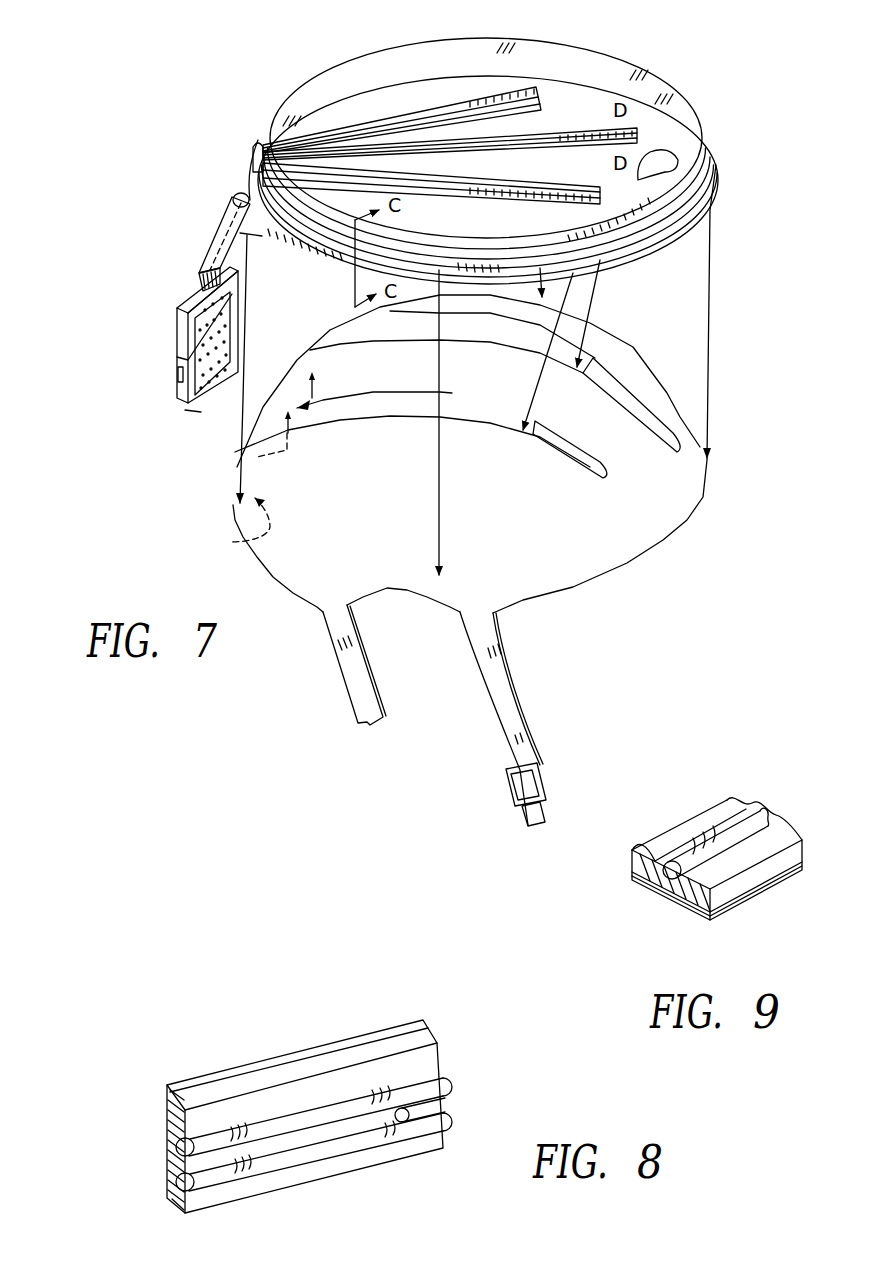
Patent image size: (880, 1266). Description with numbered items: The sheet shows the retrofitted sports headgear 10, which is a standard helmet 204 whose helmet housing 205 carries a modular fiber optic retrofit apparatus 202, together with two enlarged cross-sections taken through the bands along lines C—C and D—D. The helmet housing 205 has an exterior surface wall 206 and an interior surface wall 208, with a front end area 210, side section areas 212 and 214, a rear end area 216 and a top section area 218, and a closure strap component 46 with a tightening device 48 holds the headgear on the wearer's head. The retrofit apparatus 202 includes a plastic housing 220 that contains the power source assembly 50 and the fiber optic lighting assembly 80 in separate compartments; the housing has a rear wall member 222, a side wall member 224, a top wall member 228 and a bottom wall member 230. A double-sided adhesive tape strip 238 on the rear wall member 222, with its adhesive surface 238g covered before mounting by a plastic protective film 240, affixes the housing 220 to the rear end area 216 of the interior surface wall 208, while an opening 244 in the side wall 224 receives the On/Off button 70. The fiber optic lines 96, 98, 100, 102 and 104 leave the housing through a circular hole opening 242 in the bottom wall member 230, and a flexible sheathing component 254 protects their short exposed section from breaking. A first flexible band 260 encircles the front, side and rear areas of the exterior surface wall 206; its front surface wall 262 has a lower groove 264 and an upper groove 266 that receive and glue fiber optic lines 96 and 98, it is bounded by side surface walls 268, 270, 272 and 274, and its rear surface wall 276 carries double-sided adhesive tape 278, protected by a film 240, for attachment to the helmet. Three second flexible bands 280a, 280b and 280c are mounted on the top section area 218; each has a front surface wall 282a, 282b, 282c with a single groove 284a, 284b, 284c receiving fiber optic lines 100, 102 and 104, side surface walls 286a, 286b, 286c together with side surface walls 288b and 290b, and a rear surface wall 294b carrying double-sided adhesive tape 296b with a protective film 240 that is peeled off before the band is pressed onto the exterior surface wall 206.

In FIG. 7, the sports headgear 10 is at (767, 75).
In FIG. 7, the closure strap component 46 is at (343, 645).
In FIG. 7, the tightening device 48 is at (507, 775).
In FIG. 7, the power source assembly 50 is at (178, 403).
In FIG. 7, the On/Off button 70 is at (182, 357).
In FIG. 7, the fiber optic lighting assembly 80 is at (170, 306).
In FIG. 7, the fiber optic line 96 is at (707, 167).
In FIG. 8, the fiber optic line 96 is at (347, 1140).
In FIG. 7, the fiber optic line 98 is at (712, 143).
In FIG. 8, the fiber optic line 98 is at (437, 1085).
In FIG. 7, the fiber optic line 100 is at (456, 170).
In FIG. 7, the fiber optic line 102 is at (463, 138).
In FIG. 9, the fiber optic line 102 is at (757, 823).
In FIG. 7, the fiber optic line 104 is at (482, 88).
In FIG. 7, the modular fiber optic retrofit apparatus 202 is at (568, 47).
In FIG. 7, the standard helmet 204 is at (365, 495).
In FIG. 7, the helmet housing 205 is at (707, 510).
In FIG. 7, the exterior surface wall 206 is at (615, 502).
In FIG. 7, the interior surface wall 208 is at (247, 540).
In FIG. 7, the front end area 210 is at (667, 470).
In FIG. 7, the side section area 212 is at (420, 587).
In FIG. 7, the side section area 214 is at (613, 323).
In FIG. 7, the rear end area 216 is at (237, 468).
In FIG. 7, the top section area 218 is at (460, 393).
In FIG. 7, the plastic housing 220 is at (172, 378).
In FIG. 7, the rear wall member 222 is at (255, 315).
In FIG. 7, the side wall member 224 is at (184, 340).
In FIG. 7, the top wall member 228 is at (186, 410).
In FIG. 7, the bottom wall member 230 is at (186, 298).
In FIG. 7, the double-sided adhesive tape strip 238 is at (201, 277).
In FIG. 7, the connector groove 238g is at (257, 295).
In FIG. 7, the plastic protective film 240 is at (263, 125).
In FIG. 8, the plastic protective film 240 is at (292, 1055).
In FIG. 9, the plastic protective film 240 is at (697, 917).
In FIG. 7, the circular hole opening 242 is at (255, 277).
In FIG. 7, the opening 244 is at (173, 388).
In FIG. 7, the flexible sheathing component 254 is at (222, 233).
In FIG. 7, the first flexible band 260 is at (472, 56).
In FIG. 8, the first flexible band 260 is at (230, 1090).
In FIG. 7, the front surface wall 262 is at (650, 228).
In FIG. 8, the front surface wall 262 is at (433, 1065).
In FIG. 7, the lower groove 264 is at (717, 150).
In FIG. 8, the lower groove 264 is at (407, 1125).
In FIG. 7, the upper groove 266 is at (700, 180).
In FIG. 8, the upper groove 266 is at (297, 1110).
In FIG. 7, the side surface wall 268 is at (366, 94).
In FIG. 8, the side surface wall 268 is at (180, 1207).
In FIG. 7, the side surface wall 270 is at (629, 68).
In FIG. 8, the side surface wall 270 is at (432, 1042).
In FIG. 7, the side surface wall 272 is at (250, 250).
In FIG. 7, the side surface wall 274 is at (252, 152).
In FIG. 7, the rear surface wall 276 is at (262, 140).
In FIG. 8, the rear surface wall 276 is at (275, 1073).
In FIG. 7, the double-sided adhesive tape 278 is at (300, 130).
In FIG. 8, the double-sided adhesive tape 278 is at (390, 1045).
In FIG. 7, the second flexible band 280a is at (559, 205).
In FIG. 7, the second flexible band 280b is at (623, 121).
In FIG. 9, the second flexible band 280b is at (712, 810).
In FIG. 7, the second flexible band 280c is at (544, 93).
In FIG. 7, the front surface wall 282a is at (606, 163).
In FIG. 7, the front surface wall 282b is at (609, 110).
In FIG. 9, the front surface wall 282b is at (680, 840).
In FIG. 7, the front surface wall 282c is at (543, 87).
In FIG. 7, the groove 284a is at (542, 154).
In FIG. 7, the groove 284b is at (500, 135).
In FIG. 9, the groove 284b is at (752, 812).
In FIG. 7, the groove 284c is at (423, 107).
In FIG. 7, the side surface wall 286a is at (405, 195).
In FIG. 7, the side surface wall 286b is at (486, 165).
In FIG. 9, the side surface wall 286b is at (637, 867).
In FIG. 7, the side surface wall 286c is at (366, 123).
In FIG. 9, the side surface wall 288b is at (745, 878).
In FIG. 9, the side surface wall 290b is at (792, 852).
In FIG. 9, the rear surface wall 294b is at (680, 900).
In FIG. 9, the double-sided adhesive tape 296b is at (650, 887).